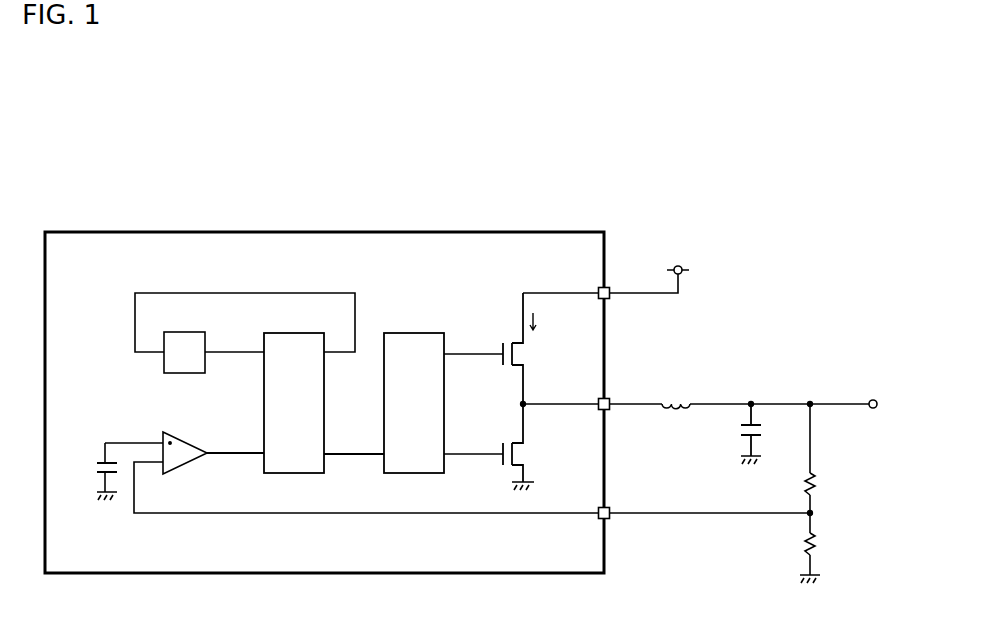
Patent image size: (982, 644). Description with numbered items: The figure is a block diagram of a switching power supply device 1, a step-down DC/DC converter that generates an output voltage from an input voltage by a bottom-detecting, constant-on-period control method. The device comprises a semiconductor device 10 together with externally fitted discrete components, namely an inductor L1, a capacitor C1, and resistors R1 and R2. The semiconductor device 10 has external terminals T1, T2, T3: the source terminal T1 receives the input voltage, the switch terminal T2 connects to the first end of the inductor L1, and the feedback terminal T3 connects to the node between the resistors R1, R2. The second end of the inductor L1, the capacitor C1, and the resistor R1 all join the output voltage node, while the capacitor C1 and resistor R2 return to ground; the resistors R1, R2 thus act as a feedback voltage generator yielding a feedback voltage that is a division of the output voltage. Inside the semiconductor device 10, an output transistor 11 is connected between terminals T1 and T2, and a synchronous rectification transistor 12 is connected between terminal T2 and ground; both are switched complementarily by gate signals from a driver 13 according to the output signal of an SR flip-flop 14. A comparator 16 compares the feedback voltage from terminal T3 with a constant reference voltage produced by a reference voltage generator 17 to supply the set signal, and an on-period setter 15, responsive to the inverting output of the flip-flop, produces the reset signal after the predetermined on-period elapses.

The switching power supply device 1 is at (45, 168).
The semiconductor device 10 is at (325, 231).
The output transistor 11 is at (522, 354).
The synchronous rectification transistor 12 is at (522, 454).
The driver 13 is at (415, 333).
The SR flip-flop 14 is at (294, 333).
The on-period setter 15 is at (187, 332).
The comparator 16 is at (179, 441).
The reference voltage generator 17 is at (93, 470).
The external terminal T1 is at (607, 299).
The external terminal T2 is at (607, 410).
The external terminal T3 is at (607, 519).
The inductor L1 is at (678, 398).
The capacitor C1 is at (739, 431).
The resistor R1 is at (818, 486).
The resistor R2 is at (818, 546).